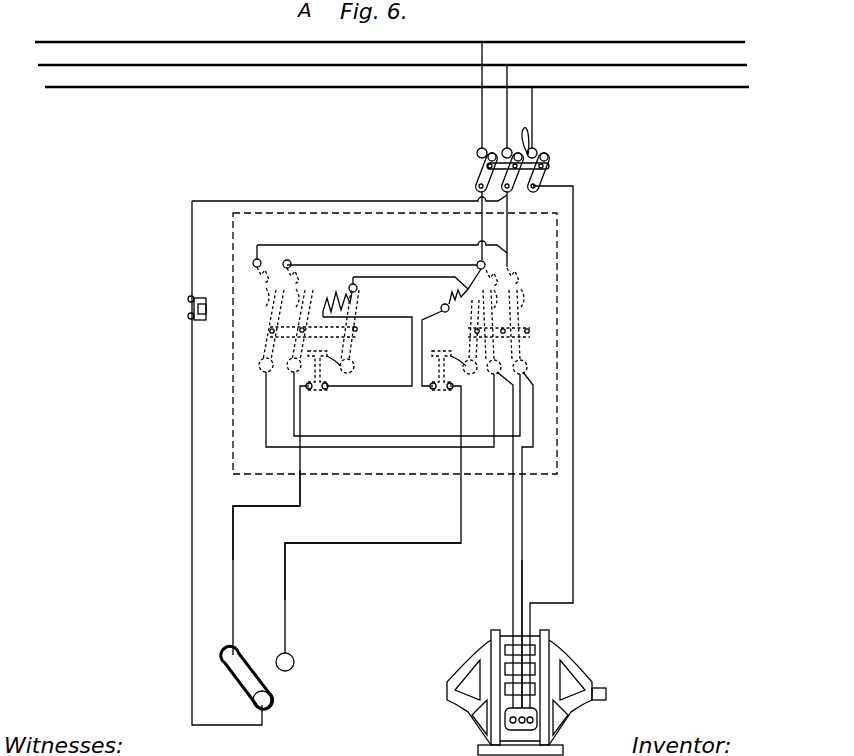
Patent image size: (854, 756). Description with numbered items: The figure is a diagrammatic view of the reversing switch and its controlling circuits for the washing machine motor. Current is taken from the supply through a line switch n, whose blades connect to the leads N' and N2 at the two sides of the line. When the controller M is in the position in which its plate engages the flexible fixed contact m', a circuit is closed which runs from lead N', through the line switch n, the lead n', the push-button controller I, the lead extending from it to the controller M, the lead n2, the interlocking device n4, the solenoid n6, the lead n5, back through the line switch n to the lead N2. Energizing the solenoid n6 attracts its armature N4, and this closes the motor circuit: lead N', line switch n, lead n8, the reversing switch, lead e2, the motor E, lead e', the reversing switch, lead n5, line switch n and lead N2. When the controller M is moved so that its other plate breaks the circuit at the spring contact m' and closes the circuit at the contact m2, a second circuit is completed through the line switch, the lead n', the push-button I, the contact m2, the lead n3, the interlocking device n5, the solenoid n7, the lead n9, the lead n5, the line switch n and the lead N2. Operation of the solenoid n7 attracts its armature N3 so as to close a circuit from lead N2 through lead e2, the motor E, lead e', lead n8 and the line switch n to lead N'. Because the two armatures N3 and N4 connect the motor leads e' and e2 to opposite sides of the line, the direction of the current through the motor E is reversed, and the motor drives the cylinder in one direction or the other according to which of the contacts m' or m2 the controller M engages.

The line switch n is at (496, 117).
The lead N2 is at (478, 138).
The lead N' is at (493, 191).
The lead n' is at (382, 447).
The lead n2 is at (303, 502).
The lead n3 is at (347, 546).
The interlocking device n4 is at (323, 392).
The lead / interlocking device n5 is at (382, 237).
The solenoid n6 is at (443, 304).
The solenoid n7 is at (344, 281).
The lead n8 is at (507, 225).
The lead n9 is at (391, 278).
The armature N3 is at (357, 329).
The armature N4 is at (478, 315).
The push-button controller I is at (190, 308).
The controller M is at (244, 676).
The flexible fixed contact m' is at (215, 644).
The contact m2 is at (292, 656).
The motor E is at (560, 655).
The lead e' is at (496, 540).
The lead e2 is at (524, 563).